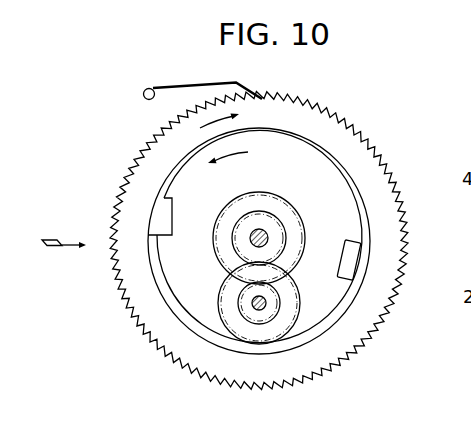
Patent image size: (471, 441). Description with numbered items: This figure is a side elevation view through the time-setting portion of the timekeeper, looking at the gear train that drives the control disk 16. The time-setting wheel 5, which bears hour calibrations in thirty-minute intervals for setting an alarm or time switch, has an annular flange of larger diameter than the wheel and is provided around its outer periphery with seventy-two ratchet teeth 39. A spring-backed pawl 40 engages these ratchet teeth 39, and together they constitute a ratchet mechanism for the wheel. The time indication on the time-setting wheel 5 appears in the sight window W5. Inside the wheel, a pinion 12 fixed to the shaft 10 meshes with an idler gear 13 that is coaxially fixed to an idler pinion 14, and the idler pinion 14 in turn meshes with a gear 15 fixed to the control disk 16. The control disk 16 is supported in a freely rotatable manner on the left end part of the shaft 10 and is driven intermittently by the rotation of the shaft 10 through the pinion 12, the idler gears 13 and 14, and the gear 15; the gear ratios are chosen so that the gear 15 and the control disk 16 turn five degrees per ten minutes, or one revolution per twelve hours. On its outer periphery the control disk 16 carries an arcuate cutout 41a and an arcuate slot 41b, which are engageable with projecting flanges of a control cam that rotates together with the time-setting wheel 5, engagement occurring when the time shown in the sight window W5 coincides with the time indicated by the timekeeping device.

The time-setting wheel 5 is at (259, 256).
The shaft 10 is at (266, 237).
The pinion 12 is at (243, 244).
The idler gear 13 is at (258, 303).
The idler pinion 14 is at (267, 307).
The gear 15 is at (254, 224).
The control disk 16 is at (325, 318).
The ratchet teeth 39 is at (292, 367).
The pawl 40 is at (181, 84).
The arcuate cutout 41a is at (166, 219).
The arcuate slot 41b is at (347, 258).
The sight window W5 is at (86, 236).